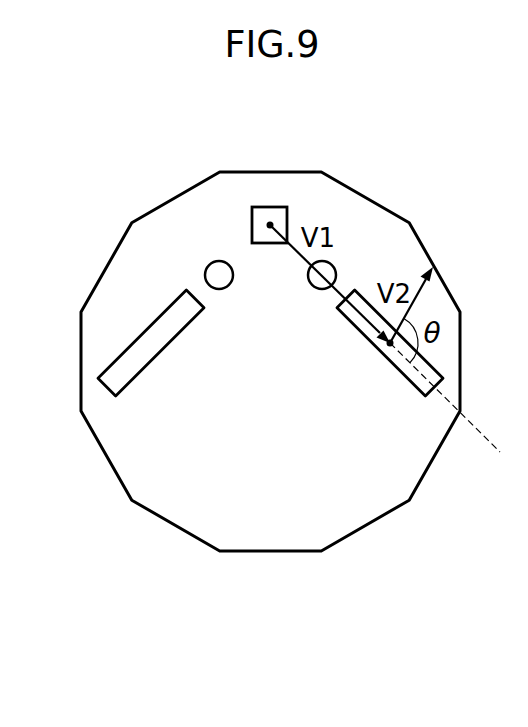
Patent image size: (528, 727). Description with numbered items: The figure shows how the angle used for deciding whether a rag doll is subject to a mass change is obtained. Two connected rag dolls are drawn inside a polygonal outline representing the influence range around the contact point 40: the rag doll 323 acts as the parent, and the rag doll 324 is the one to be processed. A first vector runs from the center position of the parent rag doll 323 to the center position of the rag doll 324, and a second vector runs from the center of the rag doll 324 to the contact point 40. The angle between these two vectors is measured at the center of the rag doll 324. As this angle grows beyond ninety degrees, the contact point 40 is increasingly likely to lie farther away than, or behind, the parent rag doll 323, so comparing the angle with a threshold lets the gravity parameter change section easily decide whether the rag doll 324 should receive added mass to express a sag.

The contact point 40 is at (433, 267).
The rag doll 323 is at (262, 207).
The rag doll 324 is at (372, 342).